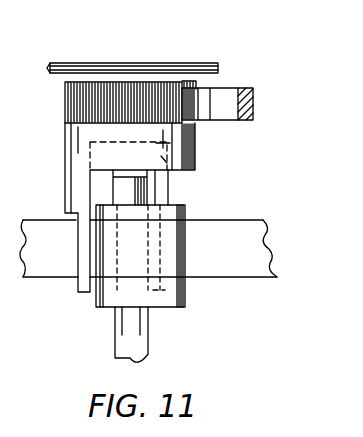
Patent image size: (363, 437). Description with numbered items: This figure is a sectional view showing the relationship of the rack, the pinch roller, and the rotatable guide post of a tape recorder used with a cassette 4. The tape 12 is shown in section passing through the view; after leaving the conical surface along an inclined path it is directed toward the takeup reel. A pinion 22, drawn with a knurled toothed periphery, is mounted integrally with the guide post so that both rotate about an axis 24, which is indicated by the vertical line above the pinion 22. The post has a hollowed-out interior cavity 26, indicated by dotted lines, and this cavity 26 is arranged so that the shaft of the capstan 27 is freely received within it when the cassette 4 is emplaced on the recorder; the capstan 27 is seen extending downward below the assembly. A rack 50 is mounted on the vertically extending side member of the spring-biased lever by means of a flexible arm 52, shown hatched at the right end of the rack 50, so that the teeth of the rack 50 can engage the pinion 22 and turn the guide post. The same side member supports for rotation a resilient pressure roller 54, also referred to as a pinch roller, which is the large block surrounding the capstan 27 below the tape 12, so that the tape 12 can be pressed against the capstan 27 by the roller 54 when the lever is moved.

The cassette 4 is at (148, 196).
The tape 12 is at (242, 220).
The pinion 22 is at (65, 92).
The axis 24 is at (128, 35).
The hollowed-out interior cavity 26 is at (183, 172).
The capstan 27 is at (150, 342).
The rack 50 is at (210, 120).
The flexible arm 52 is at (247, 87).
The pressure roller 54 is at (186, 288).